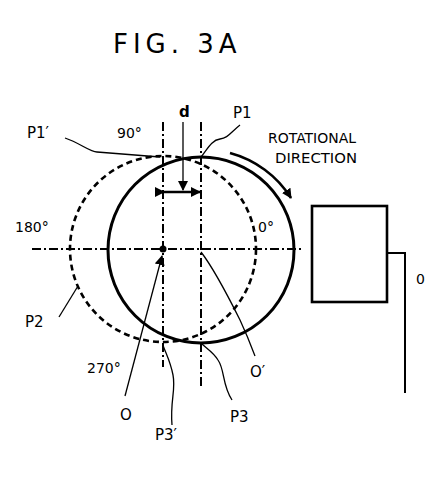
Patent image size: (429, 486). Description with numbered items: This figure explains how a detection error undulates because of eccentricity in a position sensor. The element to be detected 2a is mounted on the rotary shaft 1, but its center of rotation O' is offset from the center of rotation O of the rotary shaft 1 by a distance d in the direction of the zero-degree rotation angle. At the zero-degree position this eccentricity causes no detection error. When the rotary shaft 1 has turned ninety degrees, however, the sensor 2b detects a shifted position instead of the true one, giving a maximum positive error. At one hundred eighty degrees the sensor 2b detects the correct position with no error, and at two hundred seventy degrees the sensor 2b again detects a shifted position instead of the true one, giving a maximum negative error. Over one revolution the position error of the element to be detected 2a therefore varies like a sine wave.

The rotary shaft 1 is at (99, 322).
The element to be detected 2a is at (268, 320).
The sensor 2b is at (335, 206).